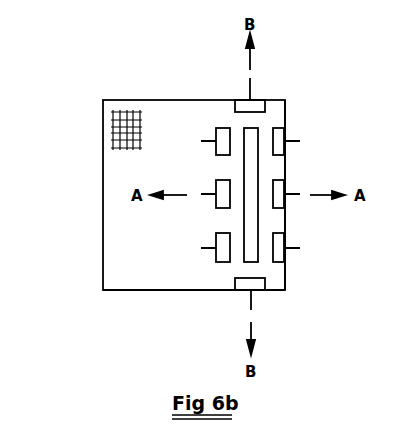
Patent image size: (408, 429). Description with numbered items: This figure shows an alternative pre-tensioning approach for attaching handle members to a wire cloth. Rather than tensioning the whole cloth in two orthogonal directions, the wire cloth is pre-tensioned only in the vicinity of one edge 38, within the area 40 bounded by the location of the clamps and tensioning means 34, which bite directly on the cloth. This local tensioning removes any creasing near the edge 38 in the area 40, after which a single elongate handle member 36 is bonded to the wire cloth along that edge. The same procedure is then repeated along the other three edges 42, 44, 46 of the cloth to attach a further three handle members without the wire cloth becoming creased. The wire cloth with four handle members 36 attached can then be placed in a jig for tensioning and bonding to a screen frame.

The clamps and tensioning means 34 is at (222, 129).
The handle member 36 is at (245, 129).
The edge 38 is at (285, 276).
The area 40 is at (285, 110).
The edge 42 is at (122, 100).
The edge 44 is at (103, 197).
The edge 46 is at (133, 290).